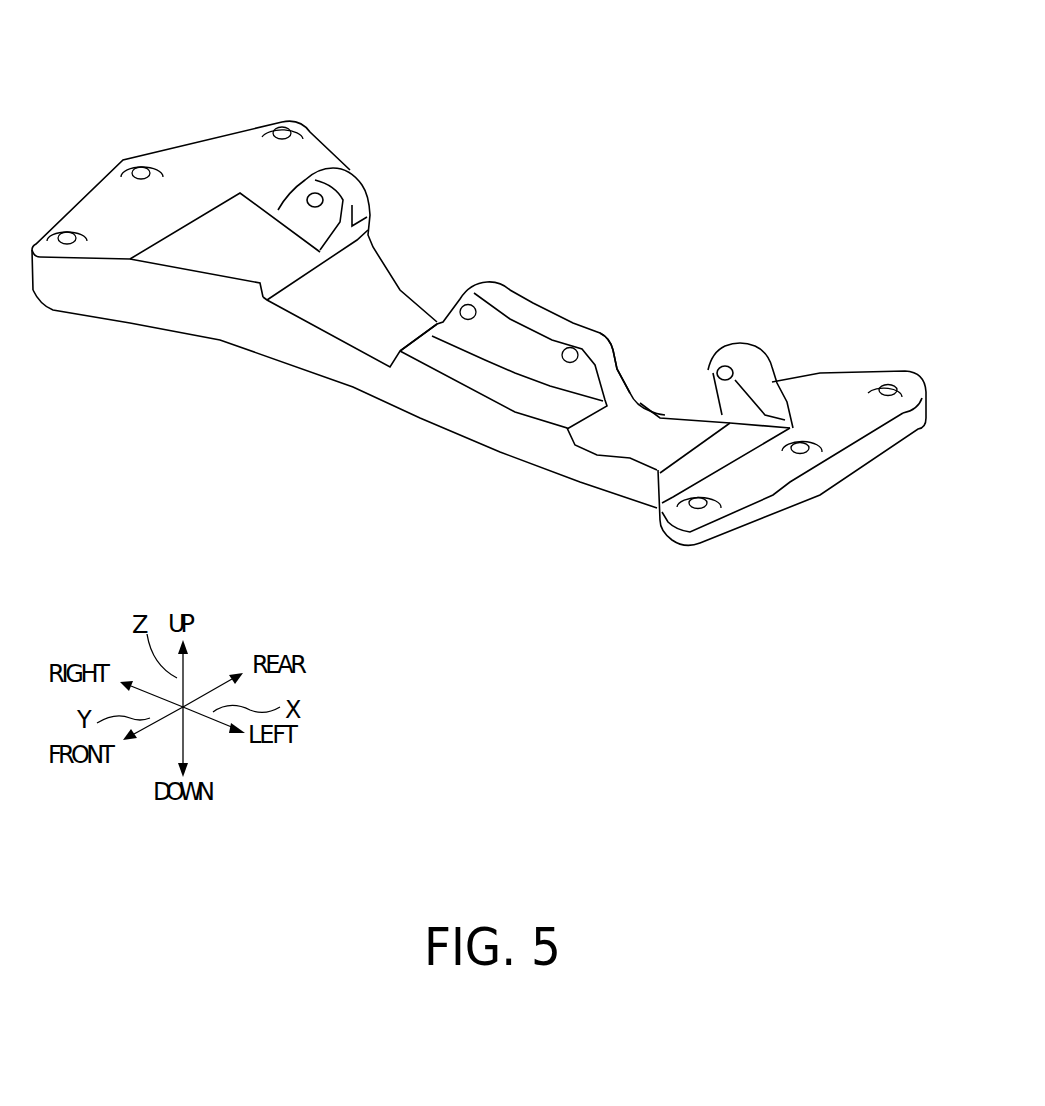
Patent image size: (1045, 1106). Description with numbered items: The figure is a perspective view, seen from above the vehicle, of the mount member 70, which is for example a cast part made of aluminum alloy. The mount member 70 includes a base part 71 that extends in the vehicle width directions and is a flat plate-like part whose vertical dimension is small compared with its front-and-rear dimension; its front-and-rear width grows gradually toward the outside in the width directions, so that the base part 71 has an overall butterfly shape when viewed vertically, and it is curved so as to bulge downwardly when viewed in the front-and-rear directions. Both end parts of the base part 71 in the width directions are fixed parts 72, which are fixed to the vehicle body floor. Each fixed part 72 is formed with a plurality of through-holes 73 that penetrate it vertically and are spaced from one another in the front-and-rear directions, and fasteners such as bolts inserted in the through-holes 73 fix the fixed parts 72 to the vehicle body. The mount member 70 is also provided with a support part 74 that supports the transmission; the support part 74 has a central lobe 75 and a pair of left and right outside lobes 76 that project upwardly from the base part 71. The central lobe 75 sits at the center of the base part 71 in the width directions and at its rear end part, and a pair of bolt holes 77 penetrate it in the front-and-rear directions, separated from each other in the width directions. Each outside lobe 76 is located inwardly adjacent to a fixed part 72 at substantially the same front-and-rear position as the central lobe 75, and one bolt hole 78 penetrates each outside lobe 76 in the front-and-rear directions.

The mount member 70 is at (586, 76).
The base part 71 is at (458, 418).
The fixed part 72 is at (202, 155).
The through-hole 73 is at (62, 233).
The support part 74 is at (616, 318).
The central lobe 75 is at (537, 307).
The outside lobe 76 is at (340, 178).
The bolt hole 77 is at (560, 355).
The bolt hole 78 is at (342, 172).